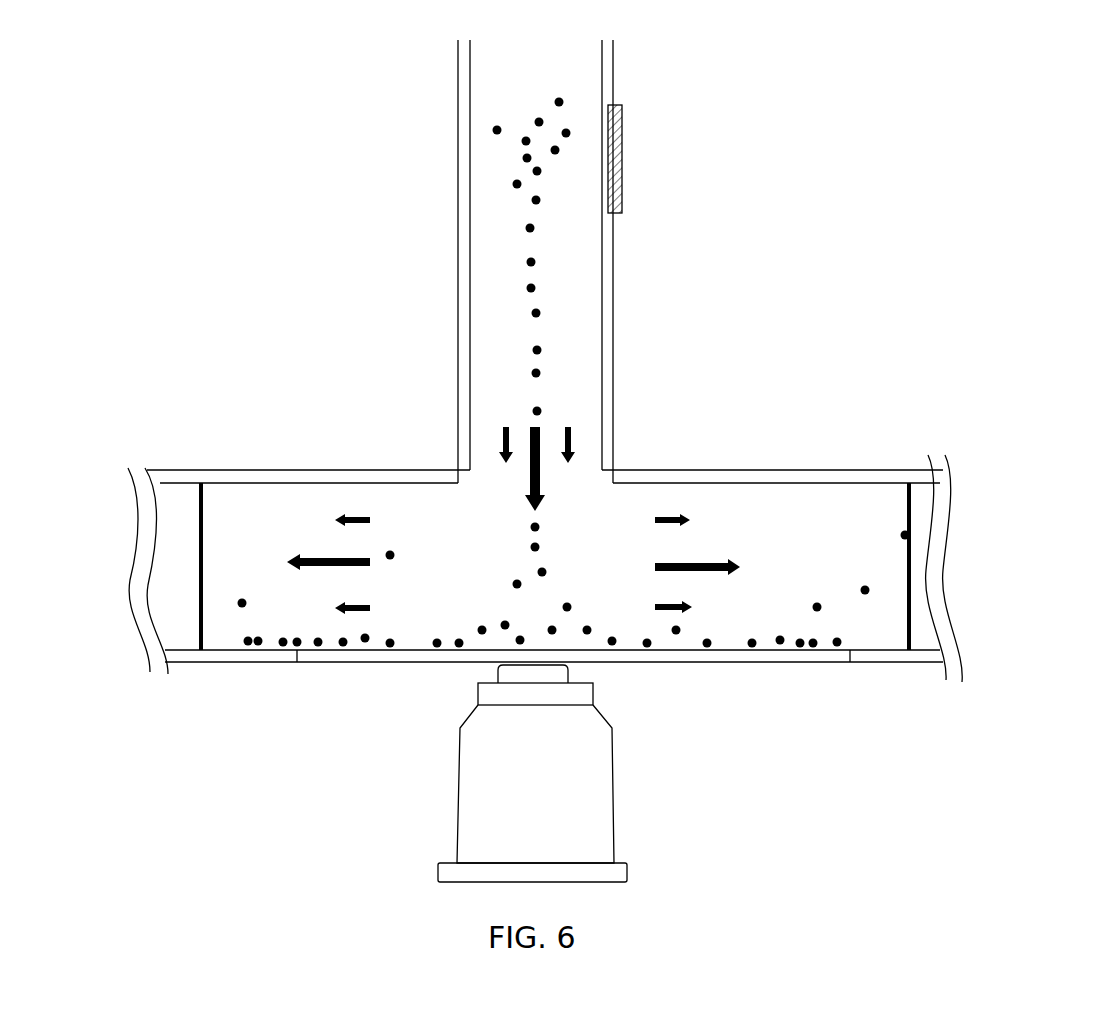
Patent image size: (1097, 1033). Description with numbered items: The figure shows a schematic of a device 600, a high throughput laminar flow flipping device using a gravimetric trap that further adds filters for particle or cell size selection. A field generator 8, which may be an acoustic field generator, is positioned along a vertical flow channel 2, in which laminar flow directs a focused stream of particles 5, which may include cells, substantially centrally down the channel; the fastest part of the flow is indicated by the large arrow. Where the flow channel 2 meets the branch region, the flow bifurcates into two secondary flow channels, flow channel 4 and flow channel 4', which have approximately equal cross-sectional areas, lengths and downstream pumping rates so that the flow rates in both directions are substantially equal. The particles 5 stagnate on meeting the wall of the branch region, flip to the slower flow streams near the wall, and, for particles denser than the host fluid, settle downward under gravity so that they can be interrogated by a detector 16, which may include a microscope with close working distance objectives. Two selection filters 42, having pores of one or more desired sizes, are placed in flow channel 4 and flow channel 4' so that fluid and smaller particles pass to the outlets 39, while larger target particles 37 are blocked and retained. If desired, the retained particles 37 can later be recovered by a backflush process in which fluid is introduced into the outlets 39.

The device 600 is at (236, 74).
The flow channel 2 is at (457, 108).
The flow channel 4 is at (545, 529).
The flow channel 4' is at (597, 673).
The particles 5 is at (556, 356).
The field generator 8 is at (622, 135).
The detector 16 is at (532, 773).
The particles 37 is at (386, 536).
The outlets 39 is at (177, 540).
The selection filters 42 is at (203, 510).